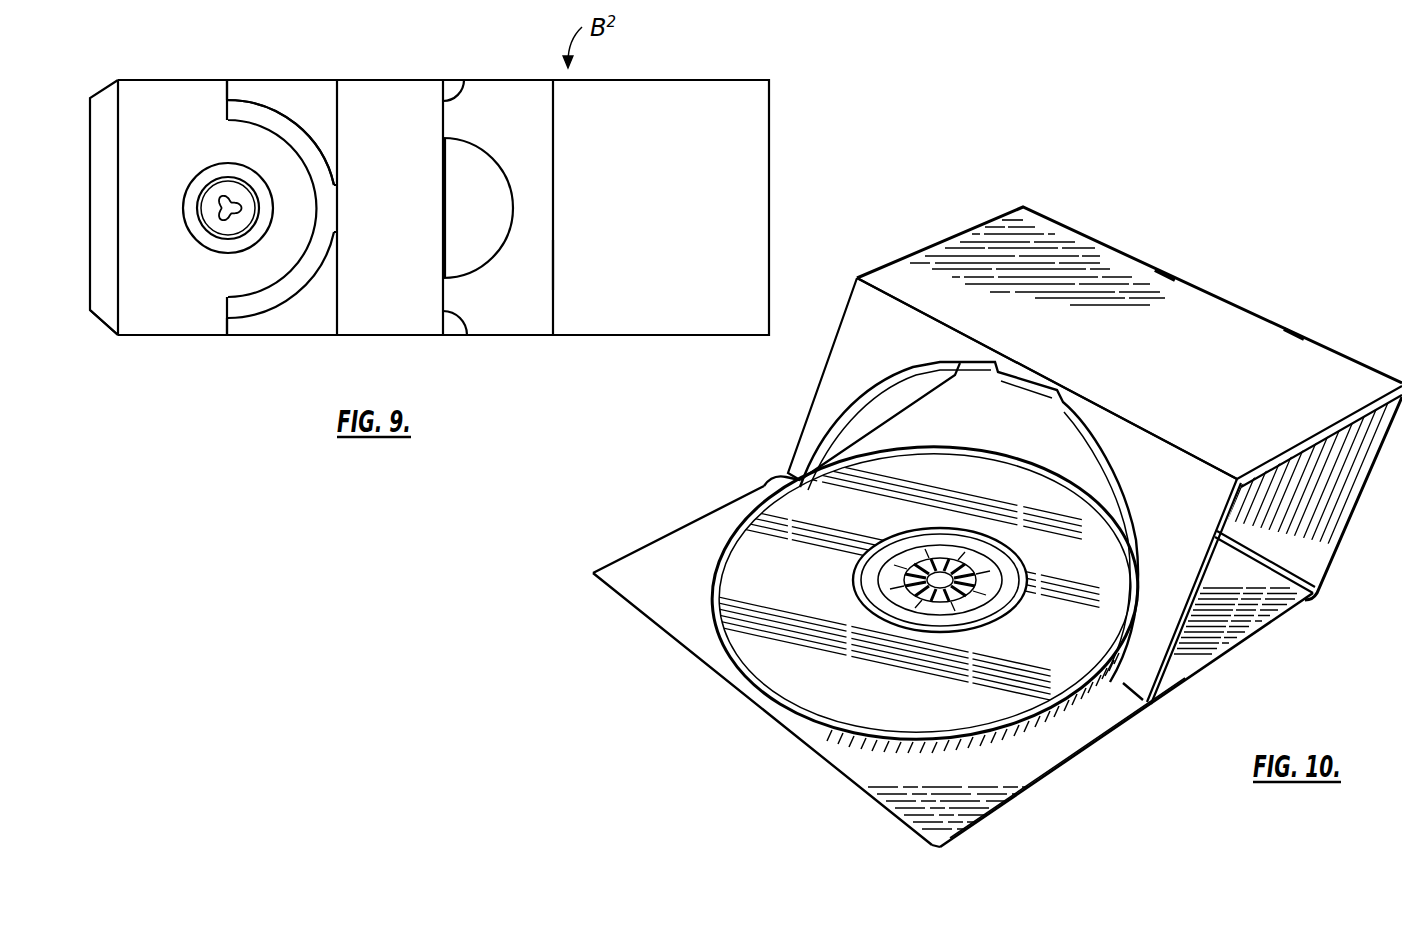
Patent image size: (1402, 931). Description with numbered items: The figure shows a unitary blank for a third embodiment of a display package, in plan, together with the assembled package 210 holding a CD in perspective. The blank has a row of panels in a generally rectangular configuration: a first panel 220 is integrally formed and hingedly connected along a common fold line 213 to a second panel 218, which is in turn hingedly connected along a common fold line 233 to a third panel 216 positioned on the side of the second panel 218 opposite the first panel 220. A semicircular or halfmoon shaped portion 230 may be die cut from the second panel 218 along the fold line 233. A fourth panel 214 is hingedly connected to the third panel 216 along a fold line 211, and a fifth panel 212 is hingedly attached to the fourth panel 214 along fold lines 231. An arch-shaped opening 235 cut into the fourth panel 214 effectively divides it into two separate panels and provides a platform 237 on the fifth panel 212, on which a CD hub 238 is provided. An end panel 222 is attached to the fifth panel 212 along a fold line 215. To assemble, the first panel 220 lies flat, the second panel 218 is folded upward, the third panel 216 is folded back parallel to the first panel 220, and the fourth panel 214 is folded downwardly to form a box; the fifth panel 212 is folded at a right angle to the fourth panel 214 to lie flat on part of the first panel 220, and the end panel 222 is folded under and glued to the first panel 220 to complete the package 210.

In FIG. 10, the package 210 is at (934, 217).
In FIG. 9, the fold line 211 is at (338, 265).
In FIG. 10, the fold line 211 is at (897, 302).
In FIG. 9, the fifth panel 212 is at (149, 134).
In FIG. 10, the fifth panel 212 is at (654, 586).
In FIG. 9, the fold line 213 is at (553, 263).
In FIG. 10, the fold line 213 is at (1302, 595).
In FIG. 9, the fourth panel 214 is at (287, 117).
In FIG. 10, the fourth panel 214 is at (847, 362).
In FIG. 9, the fold line 215 is at (118, 303).
In FIG. 10, the fold line 215 is at (782, 727).
In FIG. 9, the third panel 216 is at (369, 136).
In FIG. 10, the third panel 216 is at (1162, 401).
In FIG. 9, the second panel 218 is at (484, 134).
In FIG. 10, the second panel 218 is at (1347, 480).
In FIG. 9, the first panel 220 is at (617, 134).
In FIG. 10, the first panel 220 is at (1232, 622).
In FIG. 9, the end panel 222 is at (100, 135).
In FIG. 10, the end panel 222 is at (952, 843).
In FIG. 9, the semicircular or halfmoon shaped portion 230 is at (480, 213).
In FIG. 9, the fold lines 231 is at (225, 90).
In FIG. 10, the fold lines 231 is at (767, 483).
In FIG. 9, the fold line 233 is at (464, 80).
In FIG. 10, the fold line 233 is at (1120, 252).
In FIG. 9, the arch-shaped opening 235 is at (257, 117).
In FIG. 10, the arch-shaped opening 235 is at (898, 397).
In FIG. 9, the platform 237 is at (270, 257).
In FIG. 9, the CD hub 238 is at (183, 213).